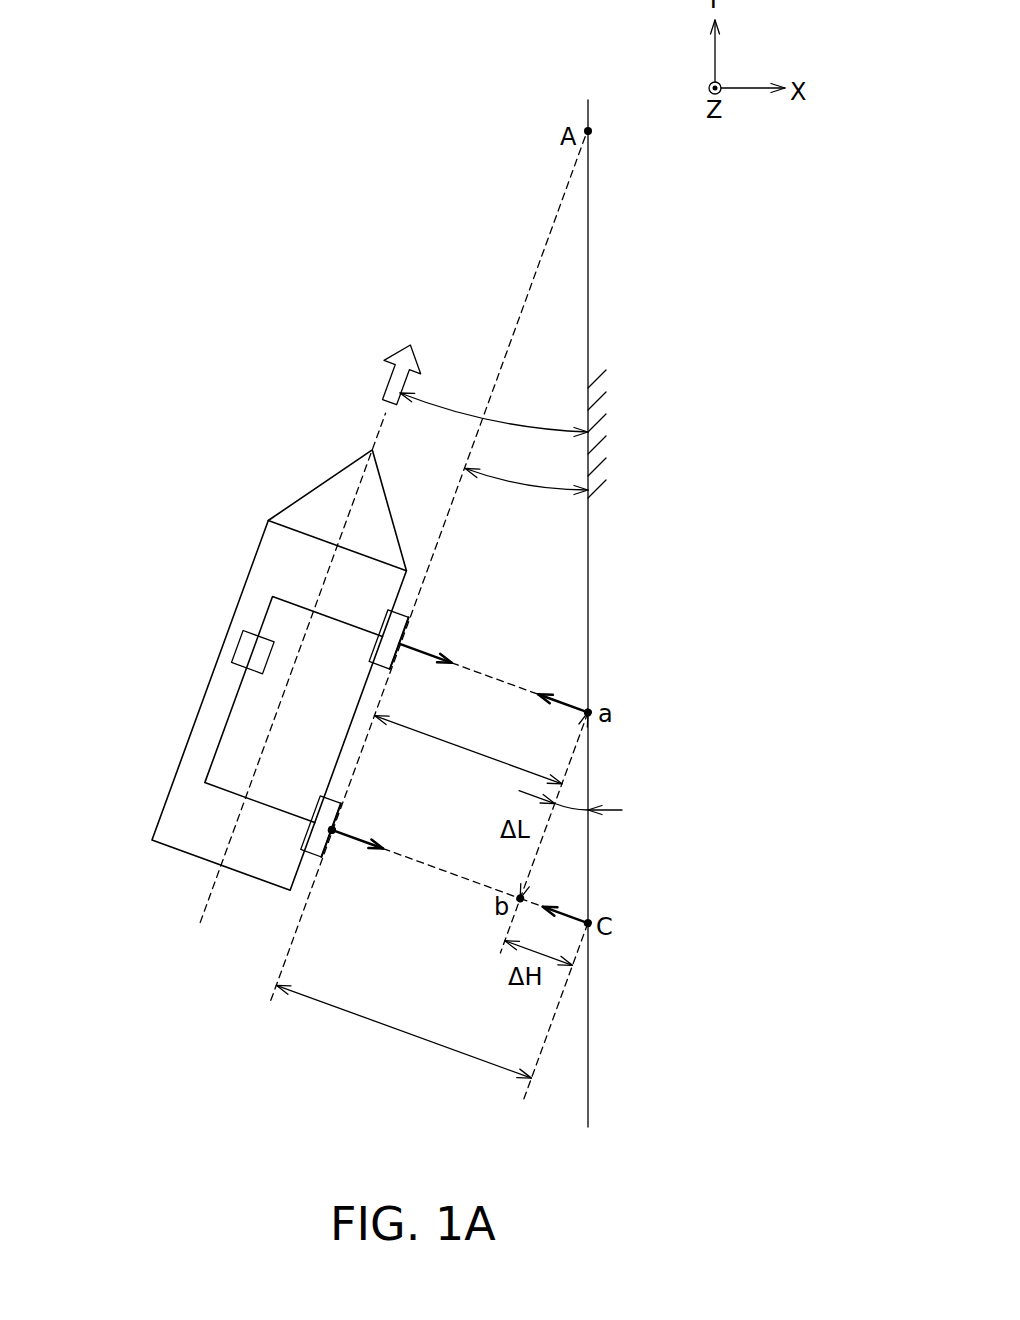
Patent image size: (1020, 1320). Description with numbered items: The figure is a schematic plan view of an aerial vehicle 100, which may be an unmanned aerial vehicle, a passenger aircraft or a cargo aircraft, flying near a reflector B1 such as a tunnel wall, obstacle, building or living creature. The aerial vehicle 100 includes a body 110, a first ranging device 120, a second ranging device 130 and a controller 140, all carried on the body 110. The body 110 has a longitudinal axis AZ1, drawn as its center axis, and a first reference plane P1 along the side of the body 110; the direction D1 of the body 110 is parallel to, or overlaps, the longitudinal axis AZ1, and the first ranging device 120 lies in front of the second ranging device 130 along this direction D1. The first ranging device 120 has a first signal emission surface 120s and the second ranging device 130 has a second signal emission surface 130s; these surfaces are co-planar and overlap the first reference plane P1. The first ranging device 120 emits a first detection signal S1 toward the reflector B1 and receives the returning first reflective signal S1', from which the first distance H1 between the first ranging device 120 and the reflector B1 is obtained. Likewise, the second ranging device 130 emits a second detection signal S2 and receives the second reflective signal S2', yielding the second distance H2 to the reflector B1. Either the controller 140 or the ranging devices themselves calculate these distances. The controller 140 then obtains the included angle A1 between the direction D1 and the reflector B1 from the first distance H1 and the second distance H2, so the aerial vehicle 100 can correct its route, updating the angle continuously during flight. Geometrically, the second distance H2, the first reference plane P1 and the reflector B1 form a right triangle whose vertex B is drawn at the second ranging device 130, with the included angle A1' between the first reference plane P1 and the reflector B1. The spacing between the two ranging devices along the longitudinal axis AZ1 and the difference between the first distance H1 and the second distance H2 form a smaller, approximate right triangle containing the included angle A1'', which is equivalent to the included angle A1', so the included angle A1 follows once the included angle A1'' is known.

The aerial vehicle 100 is at (200, 420).
The body 110 is at (247, 578).
The first ranging device 120 is at (398, 612).
The first signal emission surface 120s is at (398, 659).
The second ranging device 130 is at (328, 807).
The second signal emission surface 130s is at (337, 819).
The controller 140 is at (238, 645).
The reflector B1 is at (588, 527).
The first reference plane P1 is at (502, 372).
The direction D1 is at (401, 364).
The longitudinal axis AZ1 is at (257, 762).
The included angle A1 is at (494, 415).
The included angle A1' is at (526, 474).
The included angle A1'' is at (587, 816).
The vertex B of right triangle ABC B is at (331, 830).
The first detection signal S1 is at (469, 660).
The first reflective signal S1' is at (600, 687).
The second detection signal S2 is at (425, 876).
The second reflective signal S2' is at (590, 899).
The first distance H1 is at (468, 749).
The second distance H2 is at (404, 1031).